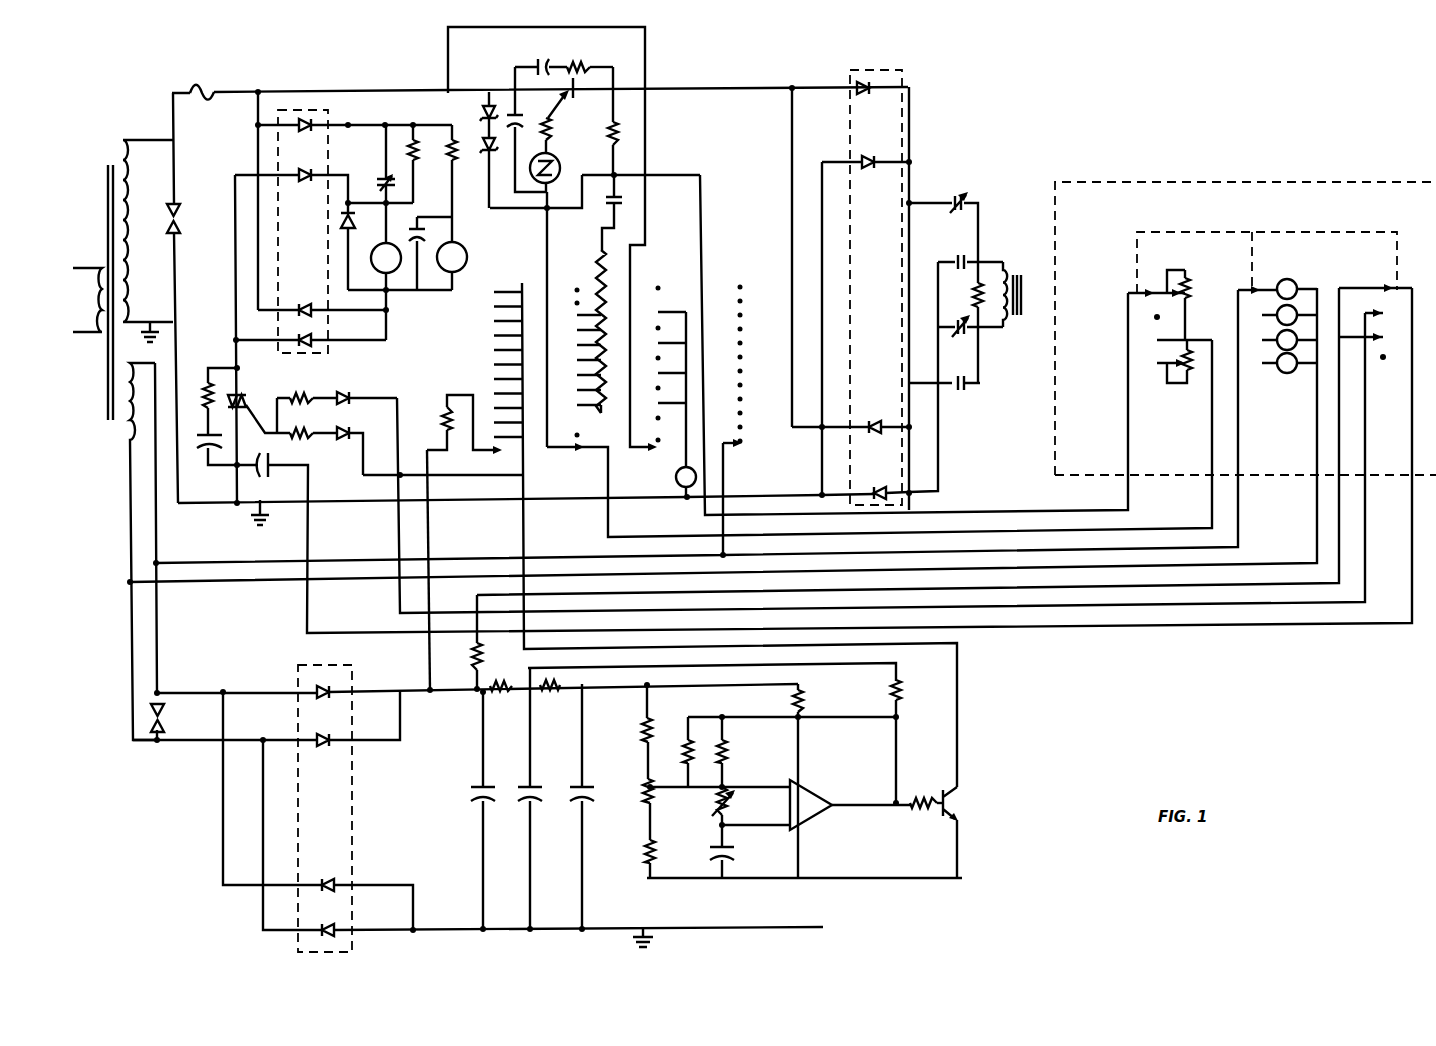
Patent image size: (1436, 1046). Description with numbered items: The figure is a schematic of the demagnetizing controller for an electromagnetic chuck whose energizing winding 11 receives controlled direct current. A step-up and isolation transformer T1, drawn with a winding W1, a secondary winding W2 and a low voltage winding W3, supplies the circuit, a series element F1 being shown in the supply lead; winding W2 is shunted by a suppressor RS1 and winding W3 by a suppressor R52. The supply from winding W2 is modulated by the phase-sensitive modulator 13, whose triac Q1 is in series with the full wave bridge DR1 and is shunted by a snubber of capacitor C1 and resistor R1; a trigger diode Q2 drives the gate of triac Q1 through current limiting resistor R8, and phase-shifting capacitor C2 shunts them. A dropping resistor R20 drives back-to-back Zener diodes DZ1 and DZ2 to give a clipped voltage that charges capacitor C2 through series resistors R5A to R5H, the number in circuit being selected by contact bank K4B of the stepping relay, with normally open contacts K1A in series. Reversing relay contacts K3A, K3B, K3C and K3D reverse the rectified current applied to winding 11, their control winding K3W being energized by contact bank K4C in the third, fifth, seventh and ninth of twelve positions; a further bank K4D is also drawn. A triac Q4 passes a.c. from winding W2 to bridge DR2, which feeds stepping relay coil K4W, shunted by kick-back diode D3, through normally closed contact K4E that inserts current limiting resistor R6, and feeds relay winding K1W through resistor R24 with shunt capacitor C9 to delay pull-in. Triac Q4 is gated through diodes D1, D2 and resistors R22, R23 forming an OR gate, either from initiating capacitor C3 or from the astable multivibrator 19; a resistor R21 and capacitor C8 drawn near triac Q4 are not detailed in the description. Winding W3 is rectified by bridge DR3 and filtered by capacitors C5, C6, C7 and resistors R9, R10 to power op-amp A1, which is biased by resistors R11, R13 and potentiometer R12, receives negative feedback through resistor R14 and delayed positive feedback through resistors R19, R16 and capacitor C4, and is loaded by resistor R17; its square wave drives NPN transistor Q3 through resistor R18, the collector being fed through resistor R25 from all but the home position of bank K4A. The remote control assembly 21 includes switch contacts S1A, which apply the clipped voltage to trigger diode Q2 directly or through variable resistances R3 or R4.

The step-up and isolation transformer T1 is at (120, 142).
The primary winding W1 is at (87, 313).
The secondary winding W2 is at (124, 208).
The low voltage winding W3 is at (128, 551).
The fuse F1 is at (202, 84).
The suppressor RS1 is at (181, 219).
The suppressor R52 is at (163, 723).
The full wave bridge DR2 is at (308, 110).
The bridge rectifier DR1 is at (851, 72).
The full wave bridge DR3 is at (300, 665).
The normally closed contact K4E is at (379, 178).
The current limiting resistor R6 is at (415, 158).
The resistor R24 is at (454, 158).
The kick-back diode D3 is at (356, 223).
The control winding of stepping relay K4W is at (392, 276).
The capacitor C9 is at (411, 236).
The control winding of relay K1 K1W is at (473, 253).
The Zener diode DZ1 is at (494, 104).
The Zener diode DZ2 is at (483, 142).
The capacitor C1 is at (542, 66).
The resistor R1 is at (573, 64).
The energy storage and phase-shifting capacitor C2 is at (527, 129).
The triac Q1 is at (571, 97).
The current limiting resistor R8 is at (556, 135).
The dropping resistor R20 is at (611, 133).
The trigger diode Q2 is at (556, 180).
The normally open contacts K1A is at (608, 211).
The series resistor R5A is at (600, 258).
The series resistor R5H is at (605, 412).
The contact bank of stepping relay K4A is at (523, 302).
The contact bank of stepping relay K4B is at (578, 301).
The contact bank of stepping relay K4C is at (662, 301).
The stepping relay contacts K4D is at (739, 352).
The control winding of reversing relay K3W is at (662, 482).
The phase sensitive a.c. power control means 13 is at (700, 50).
The reversing relay contact K3A is at (955, 200).
The reversing relay contact K3B is at (960, 252).
The reversing relay contact K3C is at (968, 334).
The reversing relay contact K3D is at (966, 391).
The energizing winding 11 is at (1025, 260).
The remote control assembly 21 is at (1226, 173).
The variable resistance R3 is at (1172, 305).
The variable resistance R4 is at (1195, 360).
The first set of switch contacts S1A is at (1277, 349).
The resistor R21 is at (206, 386).
The capacitor C8 is at (223, 454).
The initiating capacitor C3 is at (269, 470).
The triac Q4 is at (256, 392).
The resistor R22 is at (307, 405).
The diode D1 is at (352, 384).
The resistor R23 is at (300, 440).
The diode D2 is at (340, 440).
The resistor R25 is at (441, 418).
The filter capacitor C5 is at (480, 789).
The filter capacitor C6 is at (528, 801).
The filter capacitor C7 is at (580, 791).
The filter resistor R9 is at (502, 695).
The filter resistor R10 is at (554, 694).
The resistor R11 is at (645, 726).
The potentiometer R12 is at (647, 786).
The resistor R13 is at (648, 849).
The resistor R14 is at (685, 746).
The resistor R19 is at (727, 760).
The resistor R16 is at (717, 801).
The delaying capacitor C4 is at (716, 853).
The amplifier A1 is at (815, 786).
The load resistor R17 is at (893, 690).
The current limiting resistor R18 is at (908, 806).
The NPN transistor Q3 is at (950, 791).
The astable multivibrator 19 is at (1027, 721).